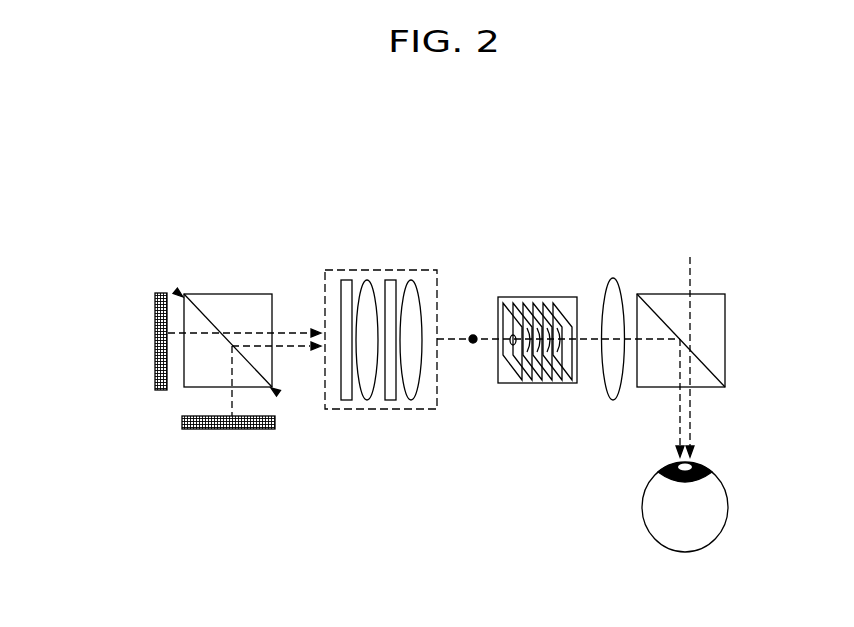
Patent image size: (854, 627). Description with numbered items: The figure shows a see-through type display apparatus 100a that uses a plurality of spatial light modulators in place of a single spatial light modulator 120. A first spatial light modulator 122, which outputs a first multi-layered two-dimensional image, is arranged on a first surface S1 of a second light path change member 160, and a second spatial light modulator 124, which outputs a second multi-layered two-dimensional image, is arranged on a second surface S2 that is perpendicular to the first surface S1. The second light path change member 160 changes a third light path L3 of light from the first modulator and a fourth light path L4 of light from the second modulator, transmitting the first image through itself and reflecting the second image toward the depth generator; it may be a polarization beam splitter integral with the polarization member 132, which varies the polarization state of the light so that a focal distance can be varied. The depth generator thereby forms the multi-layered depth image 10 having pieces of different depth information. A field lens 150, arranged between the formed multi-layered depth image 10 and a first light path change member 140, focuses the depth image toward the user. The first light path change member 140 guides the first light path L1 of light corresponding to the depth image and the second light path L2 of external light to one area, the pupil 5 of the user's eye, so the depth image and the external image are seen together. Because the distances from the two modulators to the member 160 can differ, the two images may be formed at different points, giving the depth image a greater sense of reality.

The see-through type display apparatus 100a is at (748, 137).
The spatial light modulator 120 is at (100, 395).
The first spatial light modulator 122 is at (162, 390).
The second spatial light modulator 124 is at (178, 421).
The second light path change member 160 is at (228, 294).
The first surface S1 is at (175, 290).
The second surface S2 is at (279, 394).
The third light path L3 is at (288, 331).
The fourth light path L4 is at (288, 348).
The polarization member 132 is at (378, 270).
The multi-layered depth image 10 is at (533, 297).
The field lens 150 is at (613, 278).
The first light path change member 140 is at (663, 294).
The first light path L1 is at (680, 417).
The second light path L2 is at (692, 405).
The pupil 5 is at (728, 505).